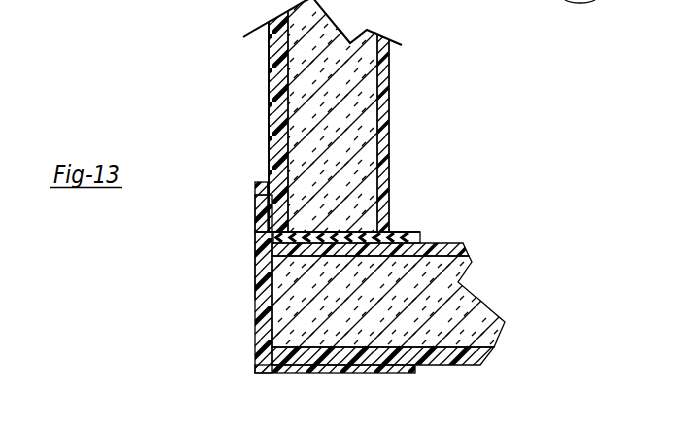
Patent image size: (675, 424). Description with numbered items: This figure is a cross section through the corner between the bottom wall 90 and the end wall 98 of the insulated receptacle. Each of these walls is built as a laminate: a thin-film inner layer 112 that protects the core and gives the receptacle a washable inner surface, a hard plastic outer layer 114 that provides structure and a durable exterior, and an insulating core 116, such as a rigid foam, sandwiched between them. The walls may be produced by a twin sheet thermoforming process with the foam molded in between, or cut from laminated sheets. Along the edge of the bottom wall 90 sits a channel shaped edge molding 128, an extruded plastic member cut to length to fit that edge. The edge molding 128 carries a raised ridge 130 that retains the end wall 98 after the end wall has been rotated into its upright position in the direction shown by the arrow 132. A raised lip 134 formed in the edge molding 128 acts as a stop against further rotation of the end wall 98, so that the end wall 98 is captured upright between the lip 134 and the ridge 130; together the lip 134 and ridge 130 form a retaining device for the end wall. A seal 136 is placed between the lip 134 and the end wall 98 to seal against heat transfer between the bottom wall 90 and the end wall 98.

The bottom wall 90 is at (431, 240).
The end wall 98 is at (269, 82).
The inner layer 112 is at (392, 95).
The outer layer 114 is at (269, 118).
The insulating core 116 is at (345, 78).
The edge molding 128 is at (255, 303).
The raised ridge 130 is at (395, 232).
The arrow 132 is at (545, 40).
The raised lip 134 is at (255, 197).
The seal 136 is at (258, 183).